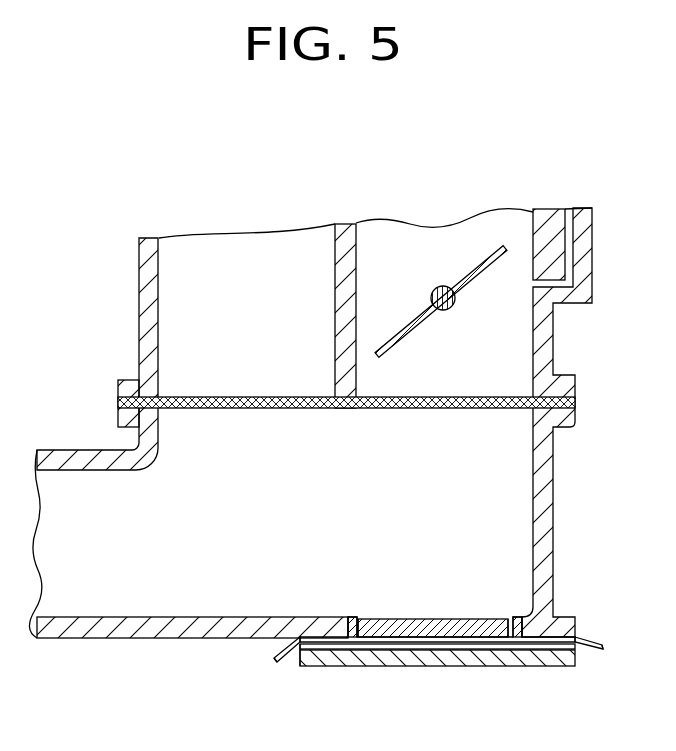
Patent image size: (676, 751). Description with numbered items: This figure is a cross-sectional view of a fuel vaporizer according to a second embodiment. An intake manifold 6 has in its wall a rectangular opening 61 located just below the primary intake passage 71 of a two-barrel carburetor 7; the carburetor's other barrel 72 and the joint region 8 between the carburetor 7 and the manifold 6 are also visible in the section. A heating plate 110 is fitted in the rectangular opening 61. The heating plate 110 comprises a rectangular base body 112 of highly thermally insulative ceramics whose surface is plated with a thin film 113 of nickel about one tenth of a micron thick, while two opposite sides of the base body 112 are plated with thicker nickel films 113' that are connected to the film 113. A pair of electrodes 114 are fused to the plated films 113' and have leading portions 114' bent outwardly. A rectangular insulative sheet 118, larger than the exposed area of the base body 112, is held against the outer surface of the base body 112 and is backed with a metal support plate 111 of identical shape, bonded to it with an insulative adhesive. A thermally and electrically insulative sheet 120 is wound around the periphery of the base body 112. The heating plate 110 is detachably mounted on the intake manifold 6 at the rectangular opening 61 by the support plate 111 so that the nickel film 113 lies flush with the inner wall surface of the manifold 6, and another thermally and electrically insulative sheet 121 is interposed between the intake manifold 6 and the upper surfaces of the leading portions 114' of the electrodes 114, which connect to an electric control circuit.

The intake manifold 6 is at (540, 488).
The rectangular opening 61 is at (552, 613).
The two-barrel carburetor 7 is at (551, 203).
The primary intake passage 71 is at (445, 243).
The chamber 72 is at (270, 263).
The gap 8 is at (533, 284).
The heating plate 110 is at (410, 608).
The metal support plate 111 is at (432, 657).
The base body 112 is at (468, 646).
The thin film of plated nickel 113 is at (433, 602).
The plated films of nickel 113' is at (444, 665).
The electrodes 114 is at (435, 597).
The leading portions 114' is at (434, 679).
The rectangular insulative sheet 118 is at (325, 664).
The thermally and electrically insulative sheet 120 is at (352, 638).
The thermally and electrically insulative sheet 121 is at (578, 642).